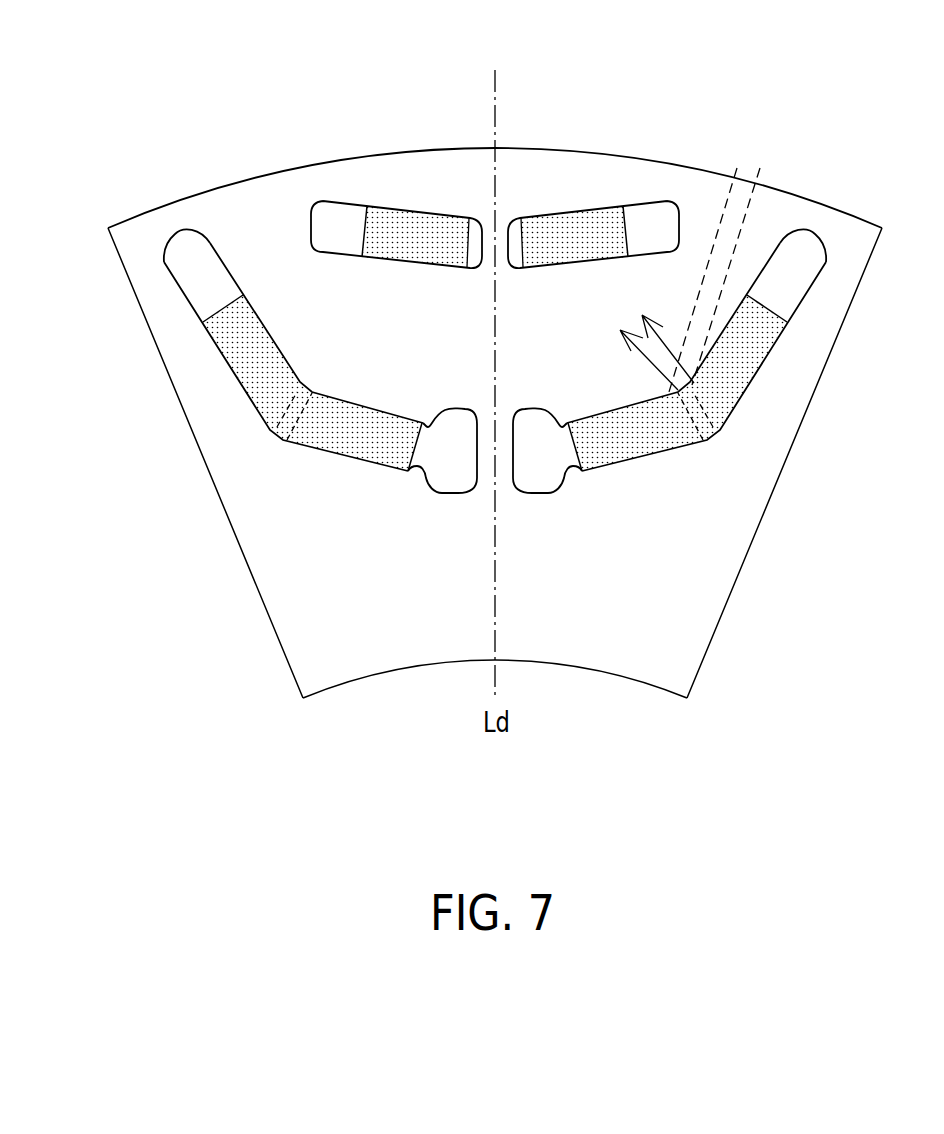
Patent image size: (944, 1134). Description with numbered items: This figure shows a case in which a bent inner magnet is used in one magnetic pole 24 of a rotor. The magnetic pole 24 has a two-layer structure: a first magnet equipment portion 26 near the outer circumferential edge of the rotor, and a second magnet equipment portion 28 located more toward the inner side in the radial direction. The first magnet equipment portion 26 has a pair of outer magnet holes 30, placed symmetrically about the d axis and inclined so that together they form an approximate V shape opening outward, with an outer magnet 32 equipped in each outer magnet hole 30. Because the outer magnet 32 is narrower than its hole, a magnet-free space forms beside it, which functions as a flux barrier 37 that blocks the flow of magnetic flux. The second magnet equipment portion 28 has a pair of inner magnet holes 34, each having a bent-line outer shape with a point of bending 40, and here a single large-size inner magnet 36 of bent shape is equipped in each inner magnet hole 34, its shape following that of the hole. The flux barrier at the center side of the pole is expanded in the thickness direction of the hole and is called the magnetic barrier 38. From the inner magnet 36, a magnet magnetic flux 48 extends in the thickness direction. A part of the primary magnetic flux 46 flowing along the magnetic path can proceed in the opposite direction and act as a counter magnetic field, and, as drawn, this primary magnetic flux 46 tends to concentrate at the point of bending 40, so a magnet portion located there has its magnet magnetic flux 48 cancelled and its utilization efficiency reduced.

The magnetic pole 24 is at (224, 63).
The first magnet equipment portion 26 is at (313, 198).
The second magnet equipment portion 28 is at (186, 227).
The outer magnet hole 30 is at (331, 209).
The outer magnet 32 is at (413, 222).
The inner magnet hole 34 is at (172, 258).
The inner magnet 36 is at (243, 355).
The flux barrier 37 is at (188, 303).
The magnetic barrier 38 is at (445, 463).
The point of bending 40 is at (270, 433).
The primary magnetic flux 46 is at (727, 197).
The magnet magnetic flux 48 is at (655, 366).